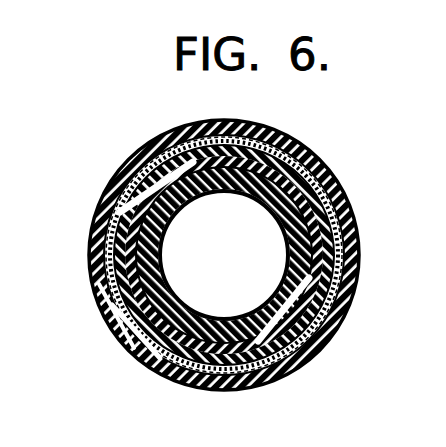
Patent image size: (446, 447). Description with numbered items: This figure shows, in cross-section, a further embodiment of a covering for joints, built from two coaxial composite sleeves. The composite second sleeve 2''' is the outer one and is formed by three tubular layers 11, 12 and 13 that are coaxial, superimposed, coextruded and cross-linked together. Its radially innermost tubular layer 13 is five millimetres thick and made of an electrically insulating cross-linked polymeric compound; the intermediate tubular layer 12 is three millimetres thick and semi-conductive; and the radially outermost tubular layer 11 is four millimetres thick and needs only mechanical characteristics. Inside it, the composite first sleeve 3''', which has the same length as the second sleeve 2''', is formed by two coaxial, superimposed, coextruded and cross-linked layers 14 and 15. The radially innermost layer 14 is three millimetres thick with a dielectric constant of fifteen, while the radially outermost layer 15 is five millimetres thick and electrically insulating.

The composite second sleeve 2''' is at (214, 251).
The composite first sleeve 3''' is at (197, 255).
The radially outermost tubular layer 11 is at (320, 166).
The intermediate tubular layer 12 is at (352, 208).
The radially innermost tubular layer 13 is at (358, 248).
The radially innermost layer 14 is at (286, 218).
The radially outermost layer 15 is at (302, 257).